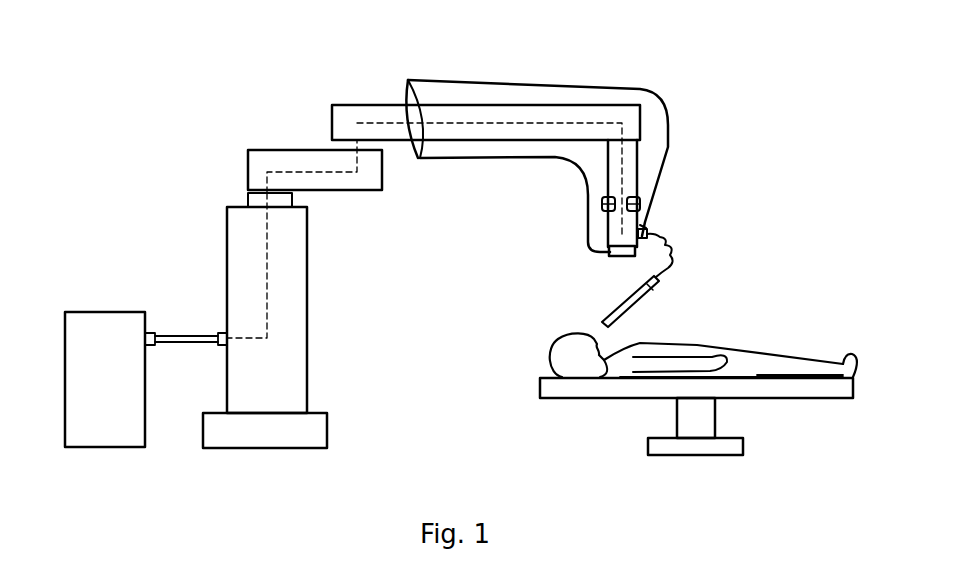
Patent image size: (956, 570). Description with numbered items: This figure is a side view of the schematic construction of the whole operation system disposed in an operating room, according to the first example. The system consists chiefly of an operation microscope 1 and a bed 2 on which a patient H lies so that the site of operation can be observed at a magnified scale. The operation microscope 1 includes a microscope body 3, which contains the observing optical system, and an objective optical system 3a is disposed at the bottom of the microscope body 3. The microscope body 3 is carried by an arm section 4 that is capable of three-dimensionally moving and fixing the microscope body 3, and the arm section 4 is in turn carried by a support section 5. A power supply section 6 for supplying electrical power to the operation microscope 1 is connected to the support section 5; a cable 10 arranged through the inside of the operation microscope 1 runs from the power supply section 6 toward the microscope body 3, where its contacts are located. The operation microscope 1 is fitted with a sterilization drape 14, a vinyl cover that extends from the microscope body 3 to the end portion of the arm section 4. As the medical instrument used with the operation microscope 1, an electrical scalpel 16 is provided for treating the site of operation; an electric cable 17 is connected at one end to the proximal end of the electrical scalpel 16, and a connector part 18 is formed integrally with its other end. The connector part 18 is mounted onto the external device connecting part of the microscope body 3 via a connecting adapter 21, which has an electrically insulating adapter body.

The operation microscope 1 is at (276, 116).
The bed 2 is at (556, 396).
The microscope body 3 is at (596, 204).
The objective optical system 3a is at (620, 256).
The arm section 4 is at (385, 205).
The support section 5 is at (298, 247).
The power supply section 6 is at (112, 312).
The cable 10 is at (566, 123).
The sterilization drape 14 is at (450, 82).
The electrical scalpel 16 is at (678, 279).
The electric cable 17 is at (676, 243).
The connector part 18 is at (672, 218).
The connecting adapter 21 is at (650, 222).
The patient H is at (707, 346).